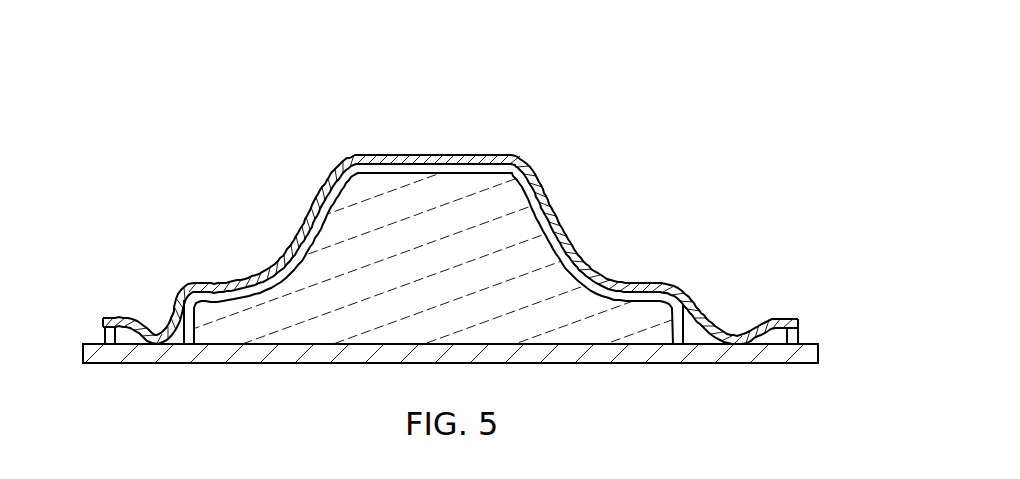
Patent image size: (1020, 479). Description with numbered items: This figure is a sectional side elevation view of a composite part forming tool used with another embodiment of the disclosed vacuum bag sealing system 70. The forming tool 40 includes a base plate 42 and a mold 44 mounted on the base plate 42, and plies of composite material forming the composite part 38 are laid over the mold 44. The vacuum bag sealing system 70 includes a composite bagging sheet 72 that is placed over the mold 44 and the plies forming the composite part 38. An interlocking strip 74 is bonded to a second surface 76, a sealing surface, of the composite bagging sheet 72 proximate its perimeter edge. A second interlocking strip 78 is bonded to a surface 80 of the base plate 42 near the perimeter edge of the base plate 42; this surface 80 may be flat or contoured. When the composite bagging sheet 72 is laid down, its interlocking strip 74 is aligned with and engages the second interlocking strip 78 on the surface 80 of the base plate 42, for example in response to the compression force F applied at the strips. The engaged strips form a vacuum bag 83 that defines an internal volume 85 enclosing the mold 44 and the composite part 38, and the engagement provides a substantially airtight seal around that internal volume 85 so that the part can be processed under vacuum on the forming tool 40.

The composite part 38 is at (453, 172).
The forming tool 40 is at (70, 357).
The base plate 42 is at (133, 364).
The mold 44 is at (441, 250).
The vacuum bag sealing system 70 is at (690, 138).
The composite bagging sheet 72 is at (790, 318).
The interlocking strip 74 is at (104, 325).
The second surface 76 is at (223, 291).
The second interlocking strip 78 is at (104, 338).
The surface of the base plate 80 is at (184, 338).
The vacuum bag 83 is at (576, 174).
The internal volume 85 is at (519, 262).
The compression force F is at (109, 297).